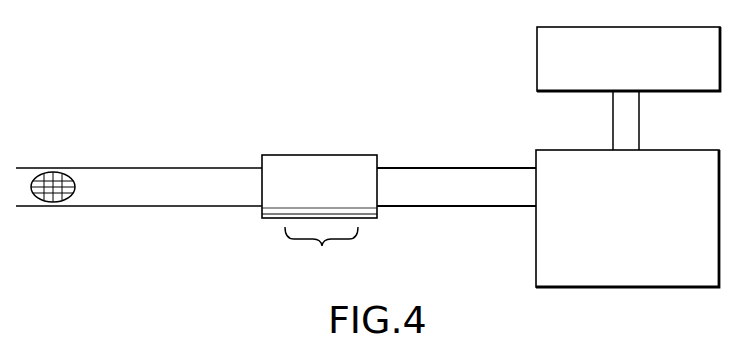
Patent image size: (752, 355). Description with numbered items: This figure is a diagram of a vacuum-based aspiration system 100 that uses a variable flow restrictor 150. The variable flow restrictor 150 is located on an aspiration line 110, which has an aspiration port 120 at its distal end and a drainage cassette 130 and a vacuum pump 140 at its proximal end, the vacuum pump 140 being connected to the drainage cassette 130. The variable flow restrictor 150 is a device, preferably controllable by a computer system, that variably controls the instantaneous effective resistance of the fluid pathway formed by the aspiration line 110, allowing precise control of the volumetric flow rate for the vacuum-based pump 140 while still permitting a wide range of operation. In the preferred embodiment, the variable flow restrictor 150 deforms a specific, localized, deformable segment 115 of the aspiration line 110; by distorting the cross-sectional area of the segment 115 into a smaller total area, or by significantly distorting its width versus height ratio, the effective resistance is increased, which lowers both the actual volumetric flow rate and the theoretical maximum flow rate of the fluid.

The vacuum-based aspiration system 100 is at (209, 50).
The aspiration line 110 is at (193, 167).
The deformable segment 115 is at (321, 253).
The aspiration port 120 is at (54, 170).
The drainage cassette 130 is at (548, 148).
The vacuum pump 140 is at (543, 58).
The variable flow restrictor 150 is at (320, 155).